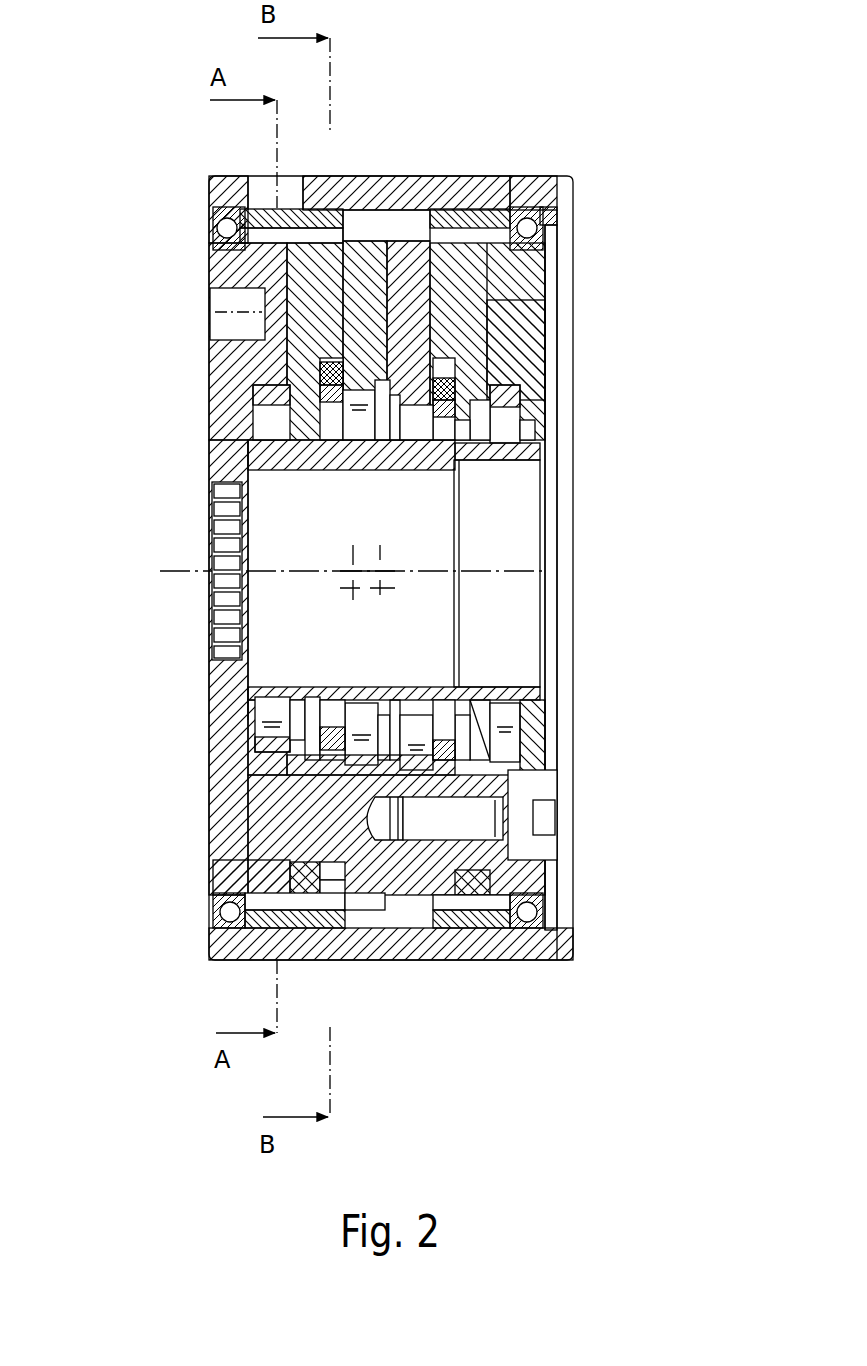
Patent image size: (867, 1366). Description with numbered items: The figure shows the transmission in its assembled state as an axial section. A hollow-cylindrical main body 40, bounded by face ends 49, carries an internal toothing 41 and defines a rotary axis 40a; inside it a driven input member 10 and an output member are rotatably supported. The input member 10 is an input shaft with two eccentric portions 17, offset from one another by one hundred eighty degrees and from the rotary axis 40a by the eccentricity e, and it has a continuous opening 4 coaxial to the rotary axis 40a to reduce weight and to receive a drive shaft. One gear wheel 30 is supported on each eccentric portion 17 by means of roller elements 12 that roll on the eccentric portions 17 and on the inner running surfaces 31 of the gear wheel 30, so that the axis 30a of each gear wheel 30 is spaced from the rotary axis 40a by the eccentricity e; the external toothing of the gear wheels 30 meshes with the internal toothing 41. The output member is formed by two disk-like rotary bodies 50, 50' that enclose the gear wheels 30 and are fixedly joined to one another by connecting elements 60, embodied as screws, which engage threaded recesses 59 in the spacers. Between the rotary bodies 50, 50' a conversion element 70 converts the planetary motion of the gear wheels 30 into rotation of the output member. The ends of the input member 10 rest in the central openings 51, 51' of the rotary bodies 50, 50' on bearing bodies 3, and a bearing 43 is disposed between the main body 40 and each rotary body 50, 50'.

The bearing bodies 3 is at (241, 427).
The continuous opening 4 is at (267, 483).
The input member 10 is at (493, 483).
The roller elements 12 is at (375, 440).
The eccentric portions 17 is at (343, 440).
The gear wheel 30 is at (363, 287).
The axis of a gear wheel 30a is at (350, 560).
The inner running surfaces 31 is at (323, 358).
The main body 40 is at (543, 190).
The rotary axis 40a is at (510, 572).
The internal toothing 41 is at (388, 218).
The bearing 43 is at (203, 214).
The face end 49 is at (213, 945).
The rotary body 50 is at (173, 341).
The rotary body 50' is at (598, 350).
The central opening 51 is at (258, 734).
The central opening 51' is at (571, 737).
The threaded recesses 59 is at (523, 782).
The connecting elements 60 is at (523, 838).
The conversion element 70 is at (240, 212).